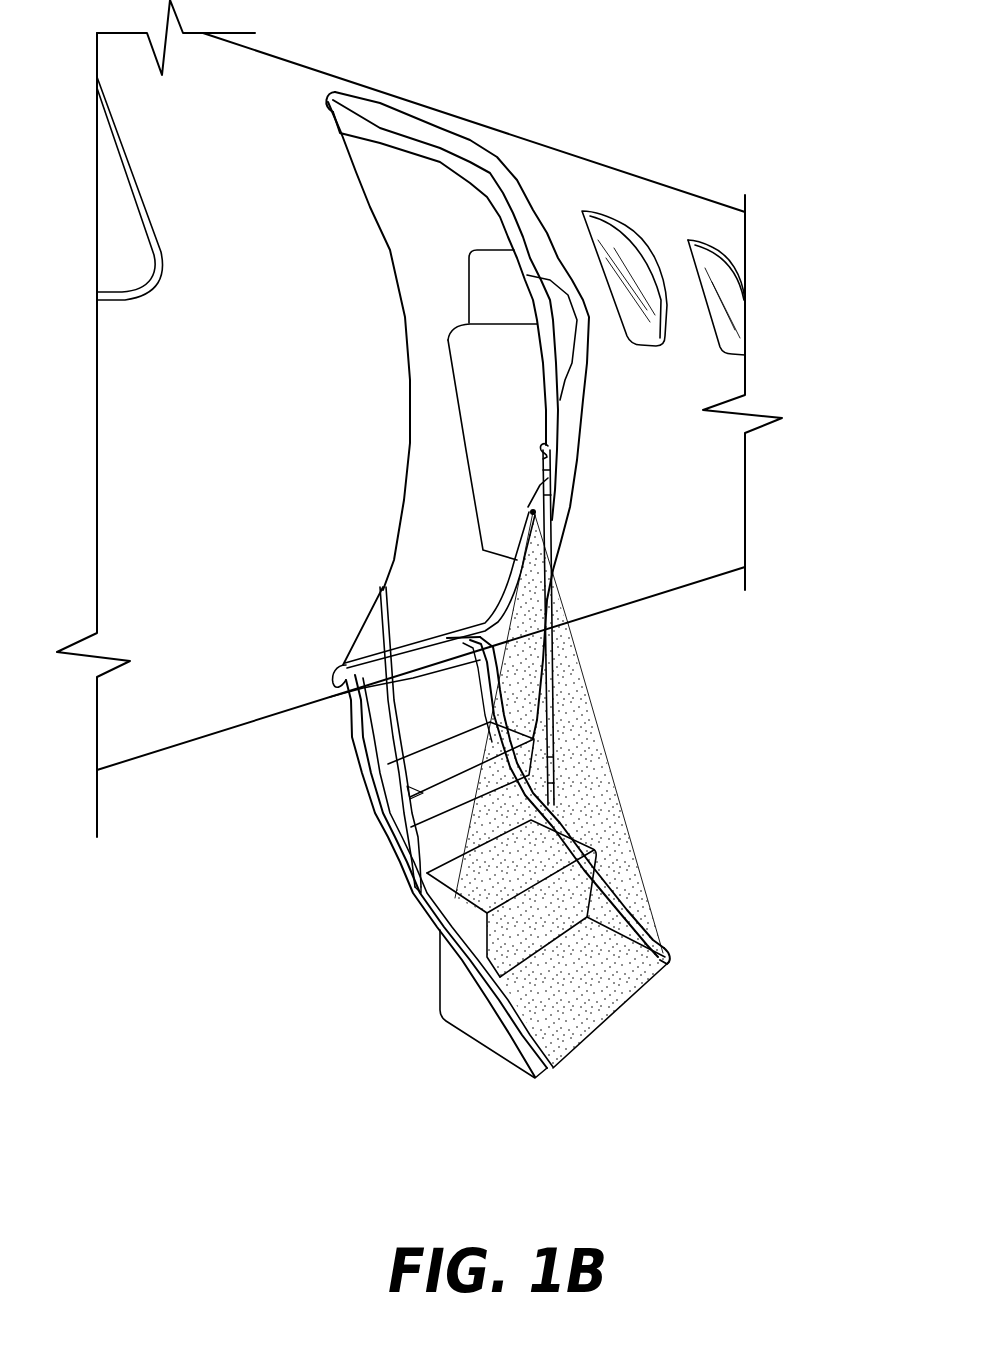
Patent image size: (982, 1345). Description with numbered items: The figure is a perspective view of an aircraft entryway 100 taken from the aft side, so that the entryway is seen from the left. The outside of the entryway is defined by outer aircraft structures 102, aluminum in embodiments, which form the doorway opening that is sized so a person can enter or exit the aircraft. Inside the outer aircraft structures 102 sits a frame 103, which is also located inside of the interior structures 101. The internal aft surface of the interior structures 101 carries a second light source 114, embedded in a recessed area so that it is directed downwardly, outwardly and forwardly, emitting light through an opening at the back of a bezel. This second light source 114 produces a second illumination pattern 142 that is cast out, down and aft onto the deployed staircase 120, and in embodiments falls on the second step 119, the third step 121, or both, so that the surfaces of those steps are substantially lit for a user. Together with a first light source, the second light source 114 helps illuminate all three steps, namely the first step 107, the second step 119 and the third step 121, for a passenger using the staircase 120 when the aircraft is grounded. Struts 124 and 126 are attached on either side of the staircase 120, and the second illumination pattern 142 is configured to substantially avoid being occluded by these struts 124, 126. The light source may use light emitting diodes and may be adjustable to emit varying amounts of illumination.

The aircraft entryway 100 is at (397, 163).
The interior structures 101 is at (541, 378).
The outer aircraft structures 102 is at (530, 223).
The frame 103 is at (557, 470).
The first step 107 is at (430, 765).
The second light source 114 is at (540, 508).
The second step 119 is at (480, 875).
The staircase 120 is at (238, 960).
The third step 121 is at (563, 1002).
The strut 124 is at (398, 748).
The strut 126 is at (550, 667).
The second illumination pattern 142 is at (660, 816).